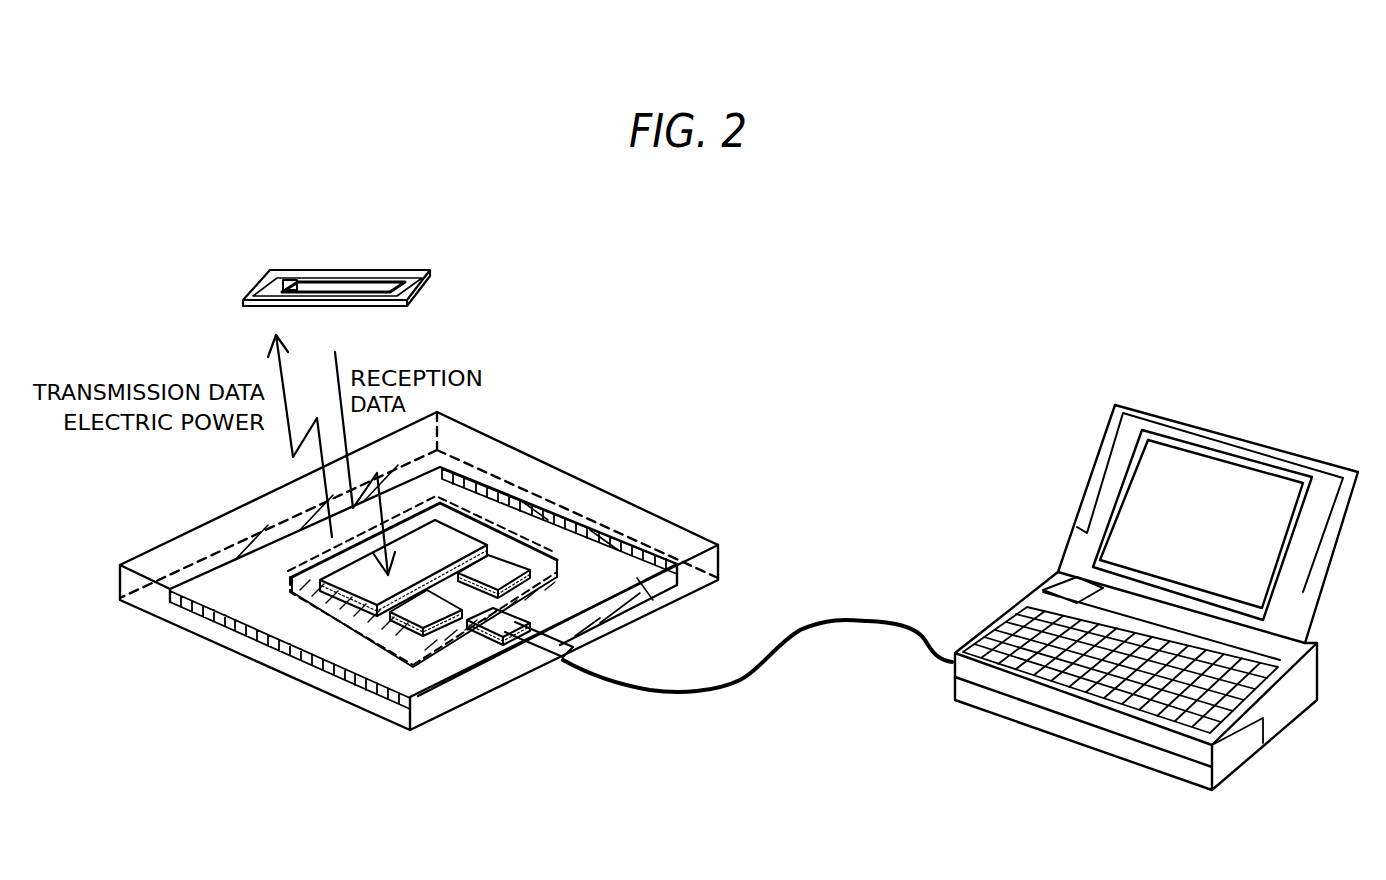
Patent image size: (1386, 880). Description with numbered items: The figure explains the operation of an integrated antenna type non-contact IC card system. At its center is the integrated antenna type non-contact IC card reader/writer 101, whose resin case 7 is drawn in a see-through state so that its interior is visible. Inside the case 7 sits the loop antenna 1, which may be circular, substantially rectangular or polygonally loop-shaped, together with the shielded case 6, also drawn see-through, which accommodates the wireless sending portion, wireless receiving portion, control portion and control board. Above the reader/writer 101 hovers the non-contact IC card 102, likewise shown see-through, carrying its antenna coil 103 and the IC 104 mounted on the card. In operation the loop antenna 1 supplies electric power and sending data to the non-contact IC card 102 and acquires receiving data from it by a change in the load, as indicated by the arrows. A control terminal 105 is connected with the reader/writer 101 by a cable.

The loop antenna 1 is at (447, 465).
The shielded case 6 is at (530, 545).
The case 7 is at (533, 473).
The integrated antenna type non-contact IC card reader/writer 101 is at (105, 613).
The non-contact IC card 102 is at (420, 270).
The antenna coil 103 is at (353, 302).
The IC 104 is at (302, 273).
The control terminal 105 is at (1103, 600).